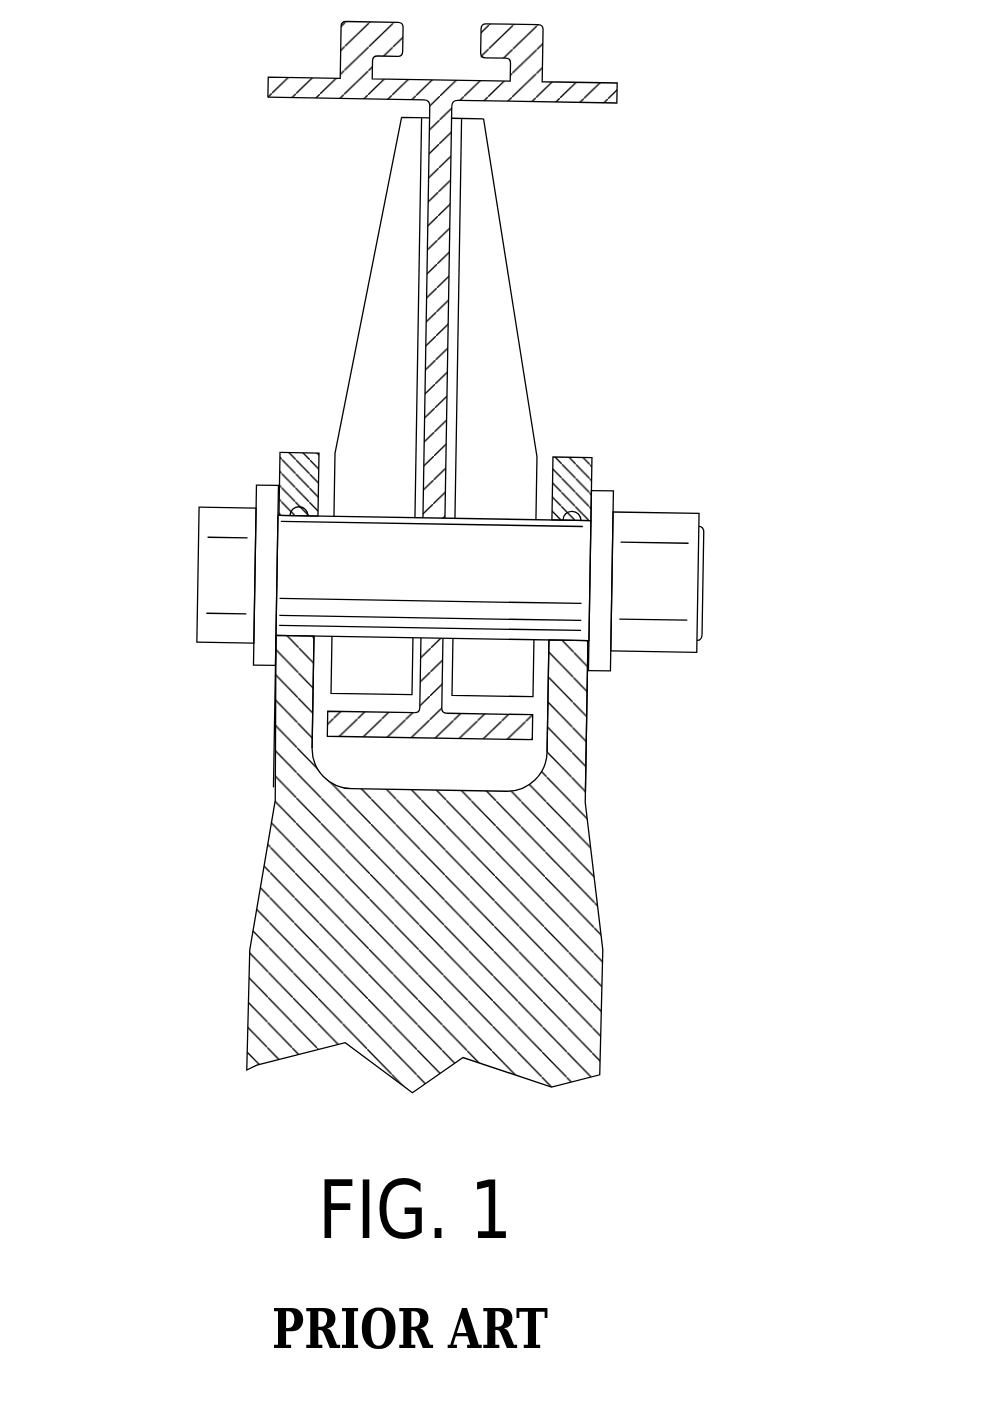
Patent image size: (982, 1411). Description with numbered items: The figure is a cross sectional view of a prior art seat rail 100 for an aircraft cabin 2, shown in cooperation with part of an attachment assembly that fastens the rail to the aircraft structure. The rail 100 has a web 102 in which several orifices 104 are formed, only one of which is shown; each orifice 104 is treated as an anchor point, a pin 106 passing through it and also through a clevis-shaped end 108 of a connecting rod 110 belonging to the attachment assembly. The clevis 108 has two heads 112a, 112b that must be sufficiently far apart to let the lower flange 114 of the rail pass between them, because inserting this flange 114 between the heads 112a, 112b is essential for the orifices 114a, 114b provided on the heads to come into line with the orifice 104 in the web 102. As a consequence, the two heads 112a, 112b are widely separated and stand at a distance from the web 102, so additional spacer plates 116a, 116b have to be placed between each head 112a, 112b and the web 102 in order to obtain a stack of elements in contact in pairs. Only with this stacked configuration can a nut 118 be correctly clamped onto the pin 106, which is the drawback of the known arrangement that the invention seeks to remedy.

The seat rail 100 is at (215, 176).
The cabin 2 is at (618, 100).
The web 102 is at (432, 258).
The orifice 104 is at (458, 512).
The pin 106 is at (215, 600).
The clevis-shaped end 108 is at (437, 842).
The connecting rod 110 is at (215, 1022).
The head 112a is at (572, 734).
The head 112b is at (292, 730).
The lower flange 114 is at (373, 733).
The orifice 114a is at (573, 508).
The orifice 114b is at (293, 508).
The spacer plate 116a is at (490, 265).
The spacer plate 116b is at (378, 357).
The nut 118 is at (678, 593).